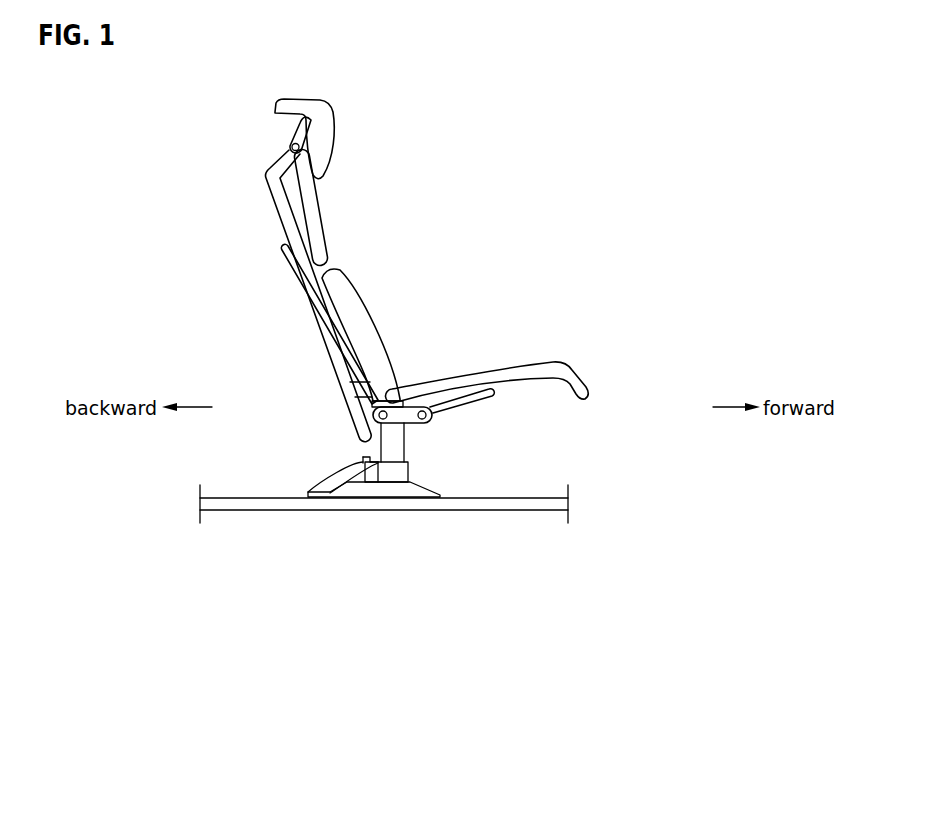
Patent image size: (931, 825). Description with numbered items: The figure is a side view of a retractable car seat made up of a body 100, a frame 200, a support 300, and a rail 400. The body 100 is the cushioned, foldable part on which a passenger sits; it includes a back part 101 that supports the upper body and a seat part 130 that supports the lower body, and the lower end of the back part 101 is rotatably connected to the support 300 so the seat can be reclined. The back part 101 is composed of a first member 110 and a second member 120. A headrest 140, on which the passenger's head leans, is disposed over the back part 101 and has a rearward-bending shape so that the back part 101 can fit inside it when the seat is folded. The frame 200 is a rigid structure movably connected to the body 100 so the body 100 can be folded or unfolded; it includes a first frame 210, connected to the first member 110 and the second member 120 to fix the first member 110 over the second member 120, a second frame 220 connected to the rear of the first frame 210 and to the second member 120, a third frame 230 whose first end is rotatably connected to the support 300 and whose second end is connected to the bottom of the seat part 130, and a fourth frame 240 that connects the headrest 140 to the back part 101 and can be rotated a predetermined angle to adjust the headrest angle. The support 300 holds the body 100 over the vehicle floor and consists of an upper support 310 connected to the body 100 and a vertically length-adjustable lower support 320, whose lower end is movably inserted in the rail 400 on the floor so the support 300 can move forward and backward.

The body 100 is at (488, 382).
The back part 101 is at (414, 197).
The first member 110 is at (313, 212).
The second member 120 is at (352, 308).
The seat part 130 is at (538, 369).
The headrest 140 is at (335, 134).
The frame 200 is at (450, 404).
The first frame 210 is at (277, 194).
The second frame 220 is at (306, 288).
The third frame 230 is at (478, 396).
The fourth frame 240 is at (298, 131).
The support 300 is at (464, 562).
The upper support 310 is at (407, 420).
The lower support 320 is at (400, 453).
The rail 400 is at (505, 507).